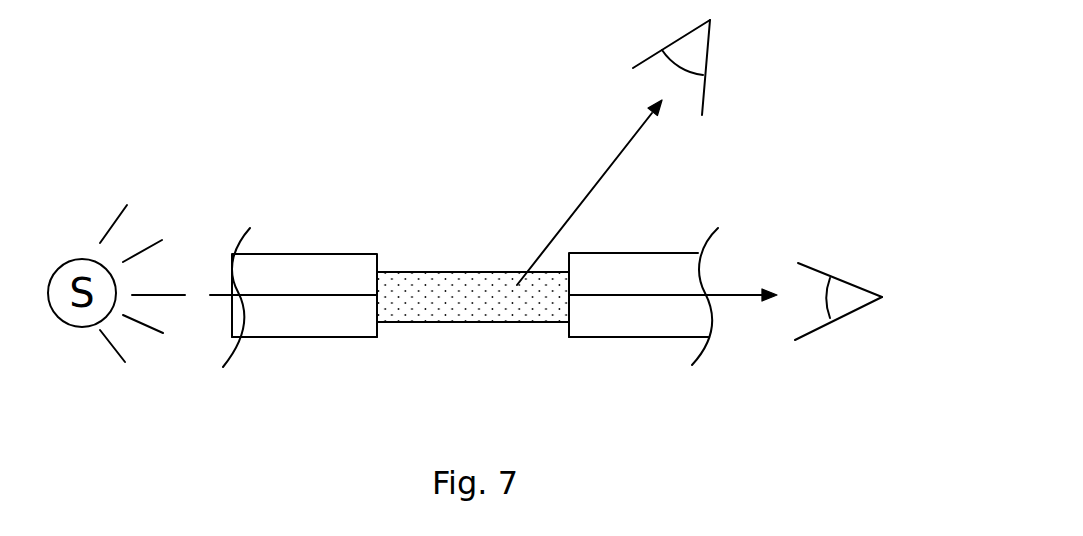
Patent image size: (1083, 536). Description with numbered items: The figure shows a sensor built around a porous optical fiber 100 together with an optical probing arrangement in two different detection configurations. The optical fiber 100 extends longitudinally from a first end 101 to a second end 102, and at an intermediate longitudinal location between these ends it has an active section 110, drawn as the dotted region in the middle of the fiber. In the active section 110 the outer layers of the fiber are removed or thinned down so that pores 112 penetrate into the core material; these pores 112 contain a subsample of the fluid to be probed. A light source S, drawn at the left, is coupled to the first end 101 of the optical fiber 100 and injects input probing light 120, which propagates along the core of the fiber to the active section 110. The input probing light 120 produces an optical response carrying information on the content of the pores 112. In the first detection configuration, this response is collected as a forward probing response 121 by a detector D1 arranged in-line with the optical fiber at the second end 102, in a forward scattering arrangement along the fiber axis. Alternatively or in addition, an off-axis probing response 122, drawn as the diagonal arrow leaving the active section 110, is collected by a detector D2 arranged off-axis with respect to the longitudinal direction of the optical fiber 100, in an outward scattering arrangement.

The optical fiber 100 is at (313, 262).
The first end 101 is at (225, 284).
The input probing light 120 is at (300, 297).
The active section 110 is at (466, 288).
The pores 112 is at (500, 322).
The off-axis probing response 122 is at (610, 167).
The second end 102 is at (729, 286).
The forward probing response 121 is at (635, 305).
The detector D1 is at (842, 305).
The detector D2 is at (697, 53).